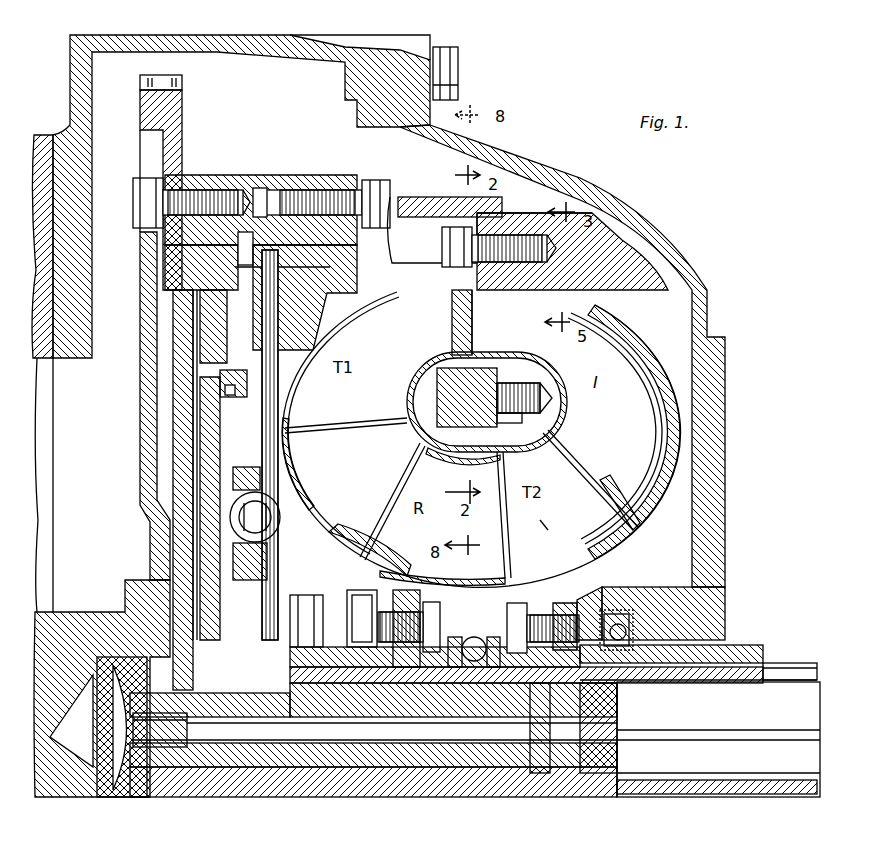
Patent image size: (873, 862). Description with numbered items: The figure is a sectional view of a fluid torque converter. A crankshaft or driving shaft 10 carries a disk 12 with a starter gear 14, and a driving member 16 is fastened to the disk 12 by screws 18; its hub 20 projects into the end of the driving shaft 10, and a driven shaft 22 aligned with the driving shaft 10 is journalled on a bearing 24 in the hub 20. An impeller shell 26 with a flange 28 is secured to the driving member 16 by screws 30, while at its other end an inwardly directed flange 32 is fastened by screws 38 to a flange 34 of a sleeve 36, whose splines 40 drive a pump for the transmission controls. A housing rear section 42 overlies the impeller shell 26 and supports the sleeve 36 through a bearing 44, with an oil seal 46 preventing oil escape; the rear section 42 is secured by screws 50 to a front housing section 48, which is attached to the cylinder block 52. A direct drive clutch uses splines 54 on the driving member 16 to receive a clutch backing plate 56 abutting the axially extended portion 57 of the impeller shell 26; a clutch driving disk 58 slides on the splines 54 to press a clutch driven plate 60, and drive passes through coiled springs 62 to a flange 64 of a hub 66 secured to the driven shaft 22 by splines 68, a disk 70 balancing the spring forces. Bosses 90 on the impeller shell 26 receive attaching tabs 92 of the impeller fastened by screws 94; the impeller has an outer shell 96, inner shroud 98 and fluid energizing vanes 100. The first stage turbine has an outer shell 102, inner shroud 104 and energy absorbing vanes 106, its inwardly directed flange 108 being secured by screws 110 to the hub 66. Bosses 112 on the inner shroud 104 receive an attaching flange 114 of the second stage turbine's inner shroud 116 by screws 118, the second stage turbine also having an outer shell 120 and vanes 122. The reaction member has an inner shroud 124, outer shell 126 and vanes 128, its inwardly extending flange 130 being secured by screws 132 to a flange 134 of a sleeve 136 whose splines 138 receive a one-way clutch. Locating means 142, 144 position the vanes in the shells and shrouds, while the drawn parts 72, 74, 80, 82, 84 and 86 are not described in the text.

The crankshaft or driving shaft 10 is at (56, 606).
The disk 12 is at (145, 372).
The starter gear 14 is at (183, 84).
The driving member 16 is at (255, 178).
The screws 18 is at (133, 197).
The hub 20 is at (122, 630).
The driven shaft 22 is at (240, 760).
The bearing 24 is at (167, 797).
The impeller shell 26 is at (560, 275).
The flange 28 is at (335, 178).
The screws 30 is at (381, 192).
The inwardly directed flange 32 is at (536, 576).
The flange 34 is at (605, 597).
The sleeve 36 is at (628, 662).
The screws 38 is at (506, 620).
The splines 40 is at (758, 650).
The rear section of housing 42 is at (706, 292).
The bearing 44 is at (718, 632).
The oil seal 46 is at (640, 624).
The front housing section 48 is at (288, 37).
The screws 50 is at (460, 68).
The cylinder block 52 is at (62, 130).
The splines 54 is at (265, 250).
The clutch backing plate 56 is at (308, 293).
The axially extended portion 57 is at (318, 272).
The clutch driving disk 58 is at (250, 334).
The clutch driven plate 60 is at (260, 376).
The coiled springs 62 is at (292, 475).
The flange 64 is at (255, 455).
The hub 66 is at (310, 641).
The splines 68 is at (350, 694).
The disk 70 is at (233, 492).
The slot 72 is at (222, 295).
The block 74 is at (200, 350).
The rod 80 is at (195, 468).
The sleeve 82 is at (205, 750).
The hub 84 is at (538, 770).
The bottom band 86 is at (598, 782).
The bosses 90 is at (420, 200).
The attaching tabs 92 is at (500, 218).
The screws 94 is at (445, 248).
The outer shell 96 is at (648, 342).
The inner shroud 98 is at (580, 422).
The fluid energizing vanes 100 is at (620, 322).
The outer shell 102 is at (333, 345).
The inner shroud 104 is at (472, 397).
The energy absorbing vanes 106 is at (360, 425).
The inwardly directed flange 108 is at (300, 566).
The screws 110 is at (352, 590).
The bosses 112 is at (480, 358).
The attaching flange 114 is at (500, 383).
The inner shroud 116 is at (515, 430).
The screws 118 is at (522, 409).
The outer shell 120 is at (542, 527).
The vanes 122 is at (585, 472).
The inner shroud 124 is at (450, 456).
The outer shell 126 is at (368, 557).
The vanes 128 is at (390, 500).
The inwardly extending flange 130 is at (420, 600).
The screws 132 is at (446, 630).
The flange 134 is at (378, 615).
The sleeve 136 is at (700, 680).
The splines 138 is at (780, 665).
The locating means 142 is at (483, 295).
The locating means 144 is at (633, 500).